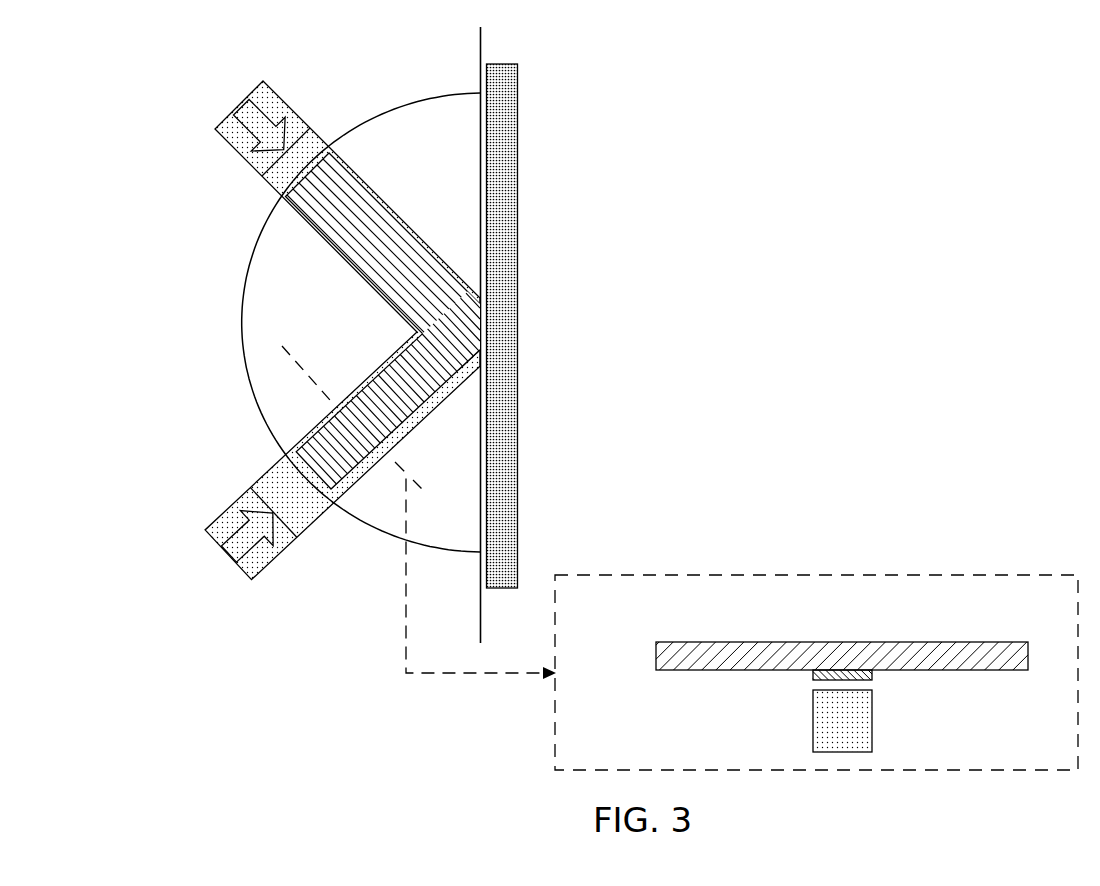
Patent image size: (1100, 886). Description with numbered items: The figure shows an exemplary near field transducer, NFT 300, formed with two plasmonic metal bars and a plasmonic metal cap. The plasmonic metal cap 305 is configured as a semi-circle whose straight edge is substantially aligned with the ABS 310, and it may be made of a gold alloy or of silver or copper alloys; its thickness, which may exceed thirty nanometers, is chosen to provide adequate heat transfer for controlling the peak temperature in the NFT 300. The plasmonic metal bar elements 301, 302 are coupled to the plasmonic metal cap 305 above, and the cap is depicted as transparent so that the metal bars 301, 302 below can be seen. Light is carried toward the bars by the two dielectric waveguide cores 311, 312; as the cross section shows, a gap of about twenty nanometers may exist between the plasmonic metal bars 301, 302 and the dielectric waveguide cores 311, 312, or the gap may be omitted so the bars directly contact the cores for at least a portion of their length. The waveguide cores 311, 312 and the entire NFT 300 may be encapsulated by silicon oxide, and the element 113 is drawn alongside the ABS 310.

The NFT 300 is at (820, 152).
The plasmonic metal bar 301 is at (316, 207).
The plasmonic metal bar 302 is at (330, 486).
The plasmonic metal cap 305 is at (242, 312).
The ABS 310 is at (481, 35).
The dielectric waveguide core 311 is at (241, 104).
The dielectric waveguide core 312 is at (209, 543).
The display panel 113 is at (518, 288).